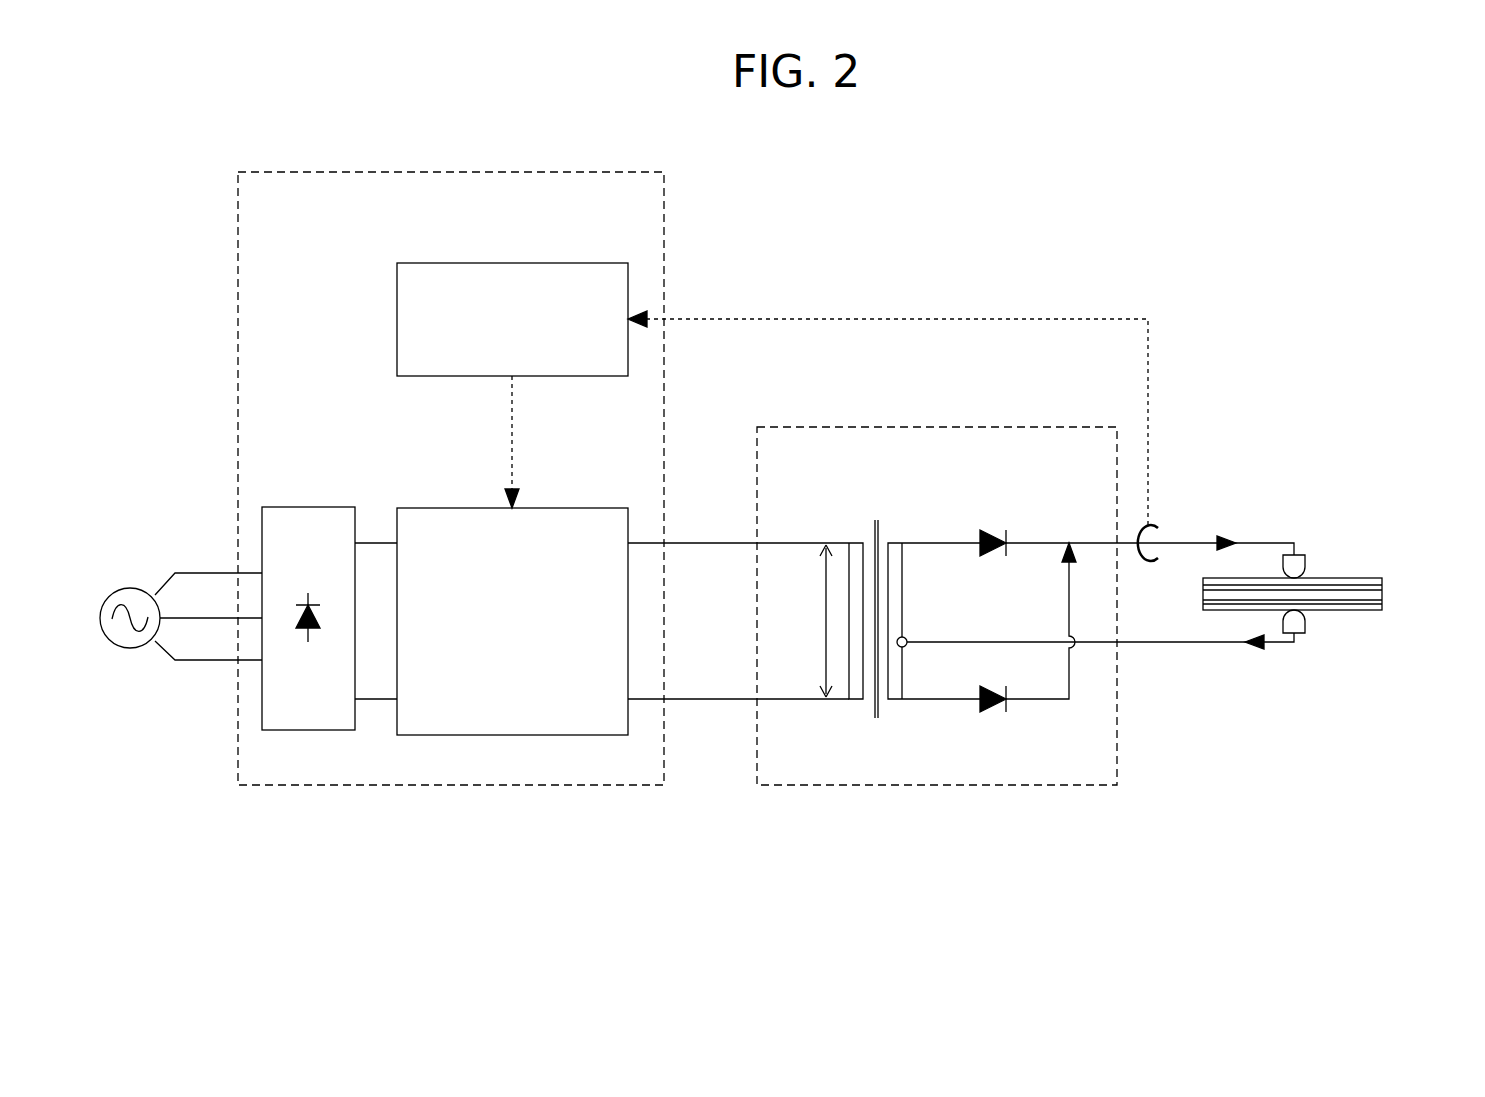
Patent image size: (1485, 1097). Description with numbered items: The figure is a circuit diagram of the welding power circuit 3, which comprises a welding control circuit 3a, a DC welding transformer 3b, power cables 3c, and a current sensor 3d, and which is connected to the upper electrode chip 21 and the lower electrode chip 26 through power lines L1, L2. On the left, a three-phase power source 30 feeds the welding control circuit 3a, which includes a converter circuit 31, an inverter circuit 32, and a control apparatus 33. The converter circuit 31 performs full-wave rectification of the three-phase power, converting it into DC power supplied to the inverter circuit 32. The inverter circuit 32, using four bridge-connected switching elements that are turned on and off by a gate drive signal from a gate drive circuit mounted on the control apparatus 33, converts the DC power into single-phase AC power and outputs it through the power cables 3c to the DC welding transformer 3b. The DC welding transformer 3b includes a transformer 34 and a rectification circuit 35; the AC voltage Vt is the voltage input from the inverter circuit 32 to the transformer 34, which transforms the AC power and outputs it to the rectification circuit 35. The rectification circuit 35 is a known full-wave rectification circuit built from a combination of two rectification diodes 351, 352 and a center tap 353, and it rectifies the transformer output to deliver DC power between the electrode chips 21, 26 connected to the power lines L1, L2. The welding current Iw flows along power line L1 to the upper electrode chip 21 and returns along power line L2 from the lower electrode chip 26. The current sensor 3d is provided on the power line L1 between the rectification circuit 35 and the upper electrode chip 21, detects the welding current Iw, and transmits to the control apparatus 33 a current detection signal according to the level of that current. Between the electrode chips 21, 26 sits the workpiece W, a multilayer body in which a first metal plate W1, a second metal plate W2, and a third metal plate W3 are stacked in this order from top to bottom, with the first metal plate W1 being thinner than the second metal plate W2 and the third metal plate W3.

The welding power circuit 3 is at (1066, 216).
The welding control circuit 3a is at (600, 787).
The DC welding transformer 3b is at (1060, 787).
The power cables 3c is at (700, 543).
The current sensor 3d is at (1150, 525).
The three-phase power source 30 is at (130, 588).
The converter circuit 31 is at (334, 507).
The inverter circuit 32 is at (570, 508).
The control apparatus 33 is at (597, 263).
The transformer 34 is at (842, 504).
The rectification circuit 35 is at (1016, 610).
The rectification diode 351 is at (988, 530).
The rectification diode 352 is at (990, 712).
The center tap 353 is at (908, 640).
The upper electrode chip 21 is at (1300, 555).
The lower electrode chip 26 is at (1300, 633).
The workpiece W is at (1337, 561).
The first metal plate W1 is at (1357, 578).
The second metal plate W2 is at (1385, 591).
The third metal plate W3 is at (1357, 610).
The power line L1 is at (1205, 543).
The power line L2 is at (1205, 645).
The welding current Iw is at (1246, 527).
The AC voltage Vt is at (807, 621).